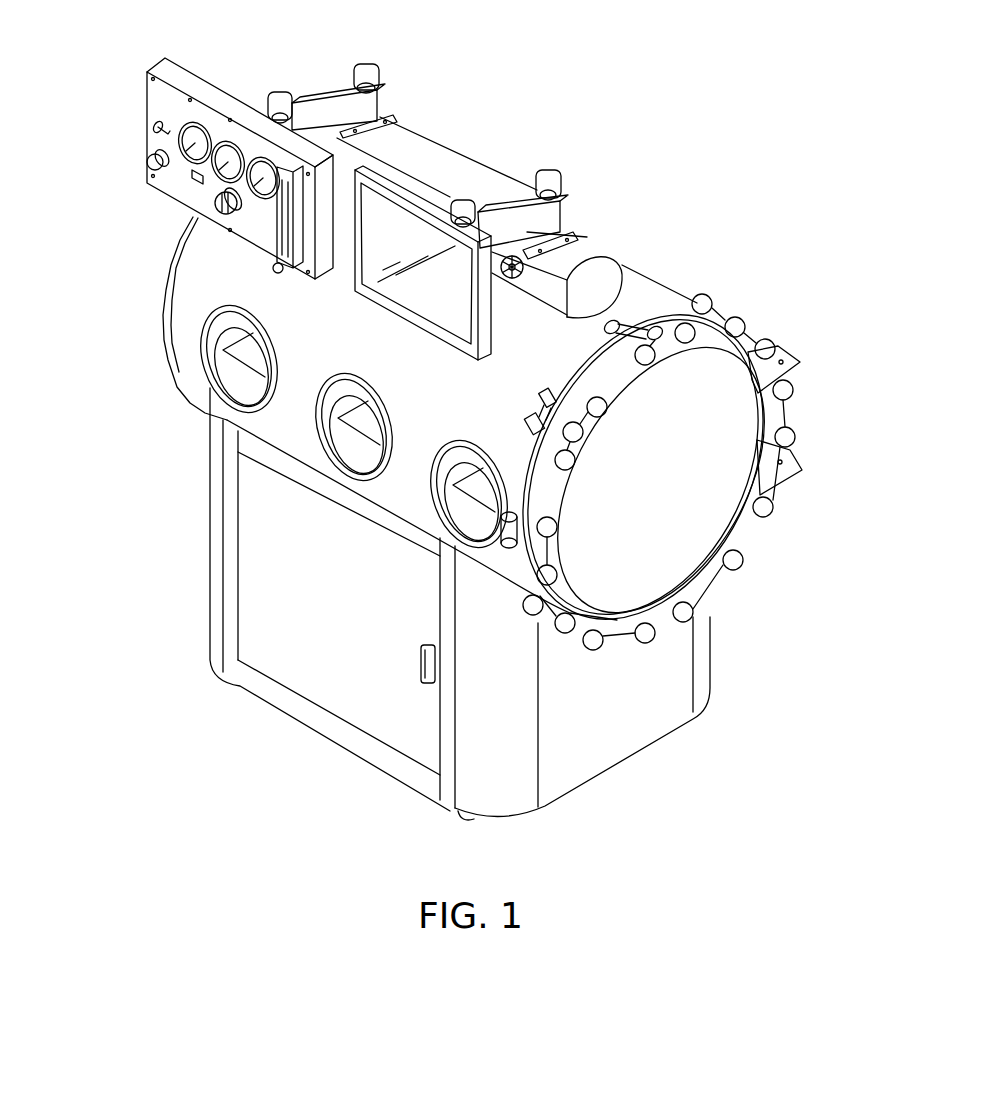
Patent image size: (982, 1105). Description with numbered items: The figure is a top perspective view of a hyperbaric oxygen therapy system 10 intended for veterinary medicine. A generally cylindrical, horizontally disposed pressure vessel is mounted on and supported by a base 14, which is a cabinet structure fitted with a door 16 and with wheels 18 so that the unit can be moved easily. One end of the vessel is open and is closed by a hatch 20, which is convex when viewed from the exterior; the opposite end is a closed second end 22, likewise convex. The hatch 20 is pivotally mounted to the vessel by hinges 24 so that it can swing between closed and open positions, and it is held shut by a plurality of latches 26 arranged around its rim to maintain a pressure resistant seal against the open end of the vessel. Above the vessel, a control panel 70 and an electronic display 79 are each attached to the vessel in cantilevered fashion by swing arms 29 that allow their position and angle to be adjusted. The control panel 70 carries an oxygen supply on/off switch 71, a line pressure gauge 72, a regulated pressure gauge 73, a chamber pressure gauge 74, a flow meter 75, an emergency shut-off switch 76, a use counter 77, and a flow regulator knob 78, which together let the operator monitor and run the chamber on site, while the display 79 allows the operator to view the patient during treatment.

The hyperbaric oxygen therapy system 10 is at (562, 74).
The base 14 is at (208, 522).
The door 16 is at (257, 614).
The wheels 18 is at (465, 815).
The hatch 20 is at (676, 497).
The closed second end 22 is at (165, 345).
The hinges 24 is at (790, 345).
The latches 26 is at (715, 302).
The swing arms 29 is at (383, 108).
The control panel 70 is at (121, 81).
The oxygen supply on/off switch 71 is at (150, 127).
The line pressure gauge 72 is at (200, 128).
The regulated pressure gauge 73 is at (235, 148).
The chamber pressure gauge 74 is at (268, 168).
The flow meter 75 is at (293, 275).
The emergency shut-off switch 76 is at (149, 162).
The use counter 77 is at (192, 181).
The flow regulator knob 78 is at (215, 210).
The electronic display 79 is at (400, 322).